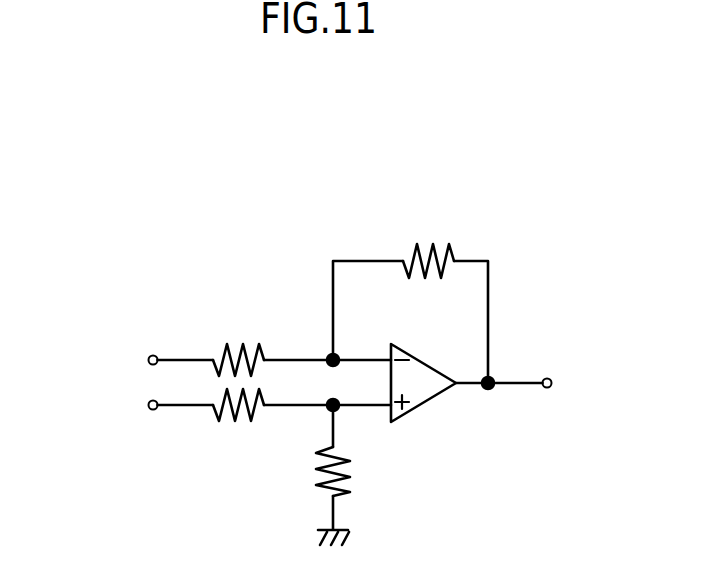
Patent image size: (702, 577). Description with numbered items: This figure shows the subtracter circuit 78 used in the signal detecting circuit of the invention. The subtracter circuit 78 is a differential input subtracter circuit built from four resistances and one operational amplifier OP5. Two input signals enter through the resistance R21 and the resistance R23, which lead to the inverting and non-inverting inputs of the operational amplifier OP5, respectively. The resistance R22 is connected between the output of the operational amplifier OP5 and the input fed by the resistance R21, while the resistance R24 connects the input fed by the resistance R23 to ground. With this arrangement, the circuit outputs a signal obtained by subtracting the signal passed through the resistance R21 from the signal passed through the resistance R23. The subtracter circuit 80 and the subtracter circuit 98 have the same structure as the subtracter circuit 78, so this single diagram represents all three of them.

The subtracter circuit 78 is at (233, 270).
The subtracter circuit 80 is at (350, 377).
The subtracter circuit 98 is at (350, 377).
The resistance R21 is at (238, 343).
The resistance R22 is at (428, 244).
The resistance R23 is at (238, 423).
The resistance R24 is at (359, 496).
The operational amplifier OP5 is at (431, 388).